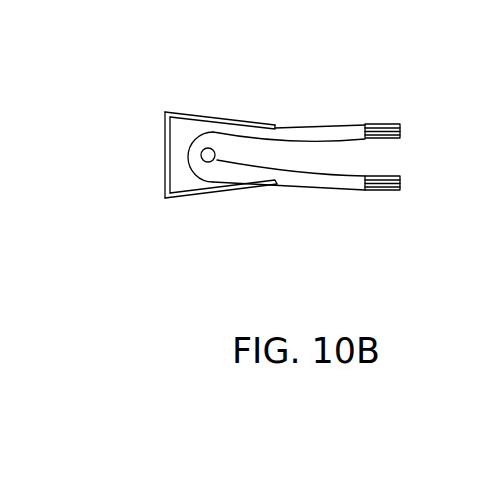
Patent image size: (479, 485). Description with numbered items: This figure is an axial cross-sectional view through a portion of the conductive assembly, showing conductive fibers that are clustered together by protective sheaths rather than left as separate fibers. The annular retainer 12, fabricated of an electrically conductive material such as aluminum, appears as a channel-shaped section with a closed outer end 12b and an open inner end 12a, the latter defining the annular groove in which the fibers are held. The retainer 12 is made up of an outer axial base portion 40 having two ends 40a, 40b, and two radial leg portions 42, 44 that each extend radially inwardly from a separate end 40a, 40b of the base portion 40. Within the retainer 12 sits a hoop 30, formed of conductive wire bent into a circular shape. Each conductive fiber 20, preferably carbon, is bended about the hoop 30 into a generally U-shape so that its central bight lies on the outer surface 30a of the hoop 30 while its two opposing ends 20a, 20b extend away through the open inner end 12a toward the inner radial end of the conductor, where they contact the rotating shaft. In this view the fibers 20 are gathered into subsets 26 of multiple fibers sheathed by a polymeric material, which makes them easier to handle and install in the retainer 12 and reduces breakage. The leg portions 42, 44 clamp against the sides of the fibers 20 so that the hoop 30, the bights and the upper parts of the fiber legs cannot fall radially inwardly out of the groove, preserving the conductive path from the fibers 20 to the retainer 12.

The annular retainer 12 is at (274, 162).
The open inner end 12a is at (280, 187).
The closed outer end 12b is at (220, 101).
The conductive fibers 20 is at (419, 129).
The first end of conductive fiber 20a is at (402, 125).
The second end of conductive fiber 20b is at (402, 180).
The subsets of fibers 26 is at (324, 118).
The hoop 30 is at (183, 127).
The outer surface of hoop 30a is at (202, 159).
The outer axial base portion 40 is at (181, 157).
The first end of base portion 40a is at (165, 114).
The second end of base portion 40b is at (165, 194).
The radial leg portion 42 is at (204, 110).
The radial leg portion 44 is at (237, 201).